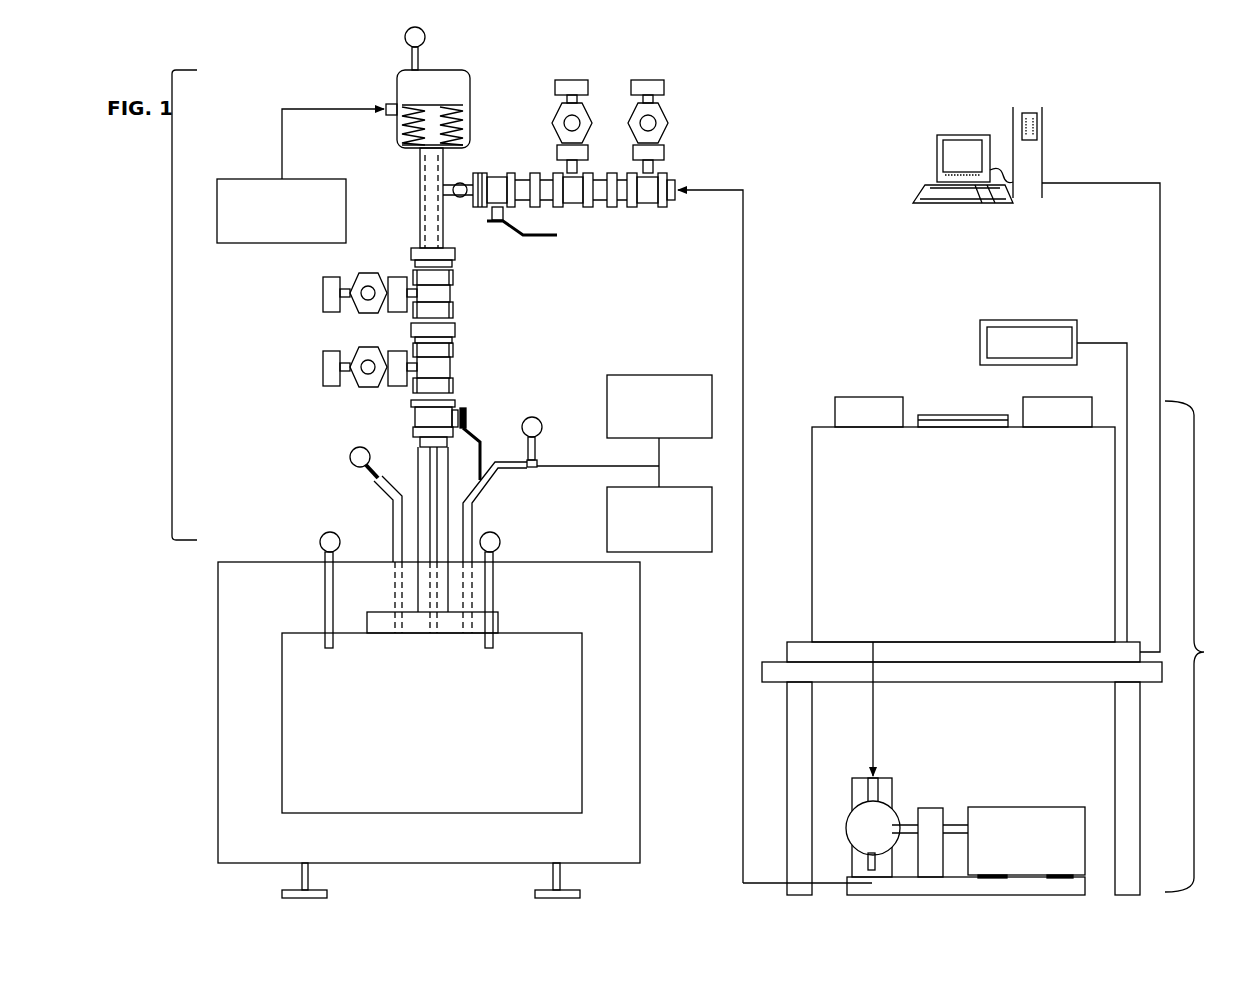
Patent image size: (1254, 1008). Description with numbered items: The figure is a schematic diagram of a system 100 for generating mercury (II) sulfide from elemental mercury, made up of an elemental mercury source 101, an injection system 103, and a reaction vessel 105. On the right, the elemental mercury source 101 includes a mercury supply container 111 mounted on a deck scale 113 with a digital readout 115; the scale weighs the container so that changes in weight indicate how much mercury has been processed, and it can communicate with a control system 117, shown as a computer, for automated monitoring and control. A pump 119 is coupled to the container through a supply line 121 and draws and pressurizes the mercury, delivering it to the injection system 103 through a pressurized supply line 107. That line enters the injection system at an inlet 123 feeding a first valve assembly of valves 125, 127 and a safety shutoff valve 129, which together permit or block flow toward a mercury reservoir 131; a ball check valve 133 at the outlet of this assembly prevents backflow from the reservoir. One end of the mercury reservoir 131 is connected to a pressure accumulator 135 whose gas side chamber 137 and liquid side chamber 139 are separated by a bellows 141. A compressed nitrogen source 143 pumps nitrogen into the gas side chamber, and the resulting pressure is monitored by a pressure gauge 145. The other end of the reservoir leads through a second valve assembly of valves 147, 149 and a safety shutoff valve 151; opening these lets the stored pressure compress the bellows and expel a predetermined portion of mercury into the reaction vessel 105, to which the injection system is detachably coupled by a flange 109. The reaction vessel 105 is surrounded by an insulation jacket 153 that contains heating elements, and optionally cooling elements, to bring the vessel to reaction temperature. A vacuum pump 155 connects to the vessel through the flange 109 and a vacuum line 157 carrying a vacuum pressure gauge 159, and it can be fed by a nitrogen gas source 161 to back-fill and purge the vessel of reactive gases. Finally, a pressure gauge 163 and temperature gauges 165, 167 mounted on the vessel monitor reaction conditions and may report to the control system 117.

The system 100 is at (1182, 122).
The elemental mercury source 101 is at (1206, 652).
The injection system 103 is at (170, 302).
The reaction vessel 105 is at (282, 722).
The supply line 107 is at (743, 280).
The flange 109 is at (498, 620).
The mercury supply container 111 is at (820, 427).
The deck scale 113 is at (800, 642).
The digital readout 115 is at (980, 343).
The control system 117 is at (937, 157).
The pump 119 is at (1025, 807).
The supply line 121 is at (875, 724).
The inlet 123 is at (668, 207).
The valve 125 is at (670, 125).
The valve 127 is at (573, 80).
The shutoff valve 129 is at (536, 242).
The mercury reservoir 131 is at (420, 186).
The ball check valve 133 is at (466, 182).
The pressure accumulator 135 is at (397, 90).
The gas side chamber 137 is at (433, 80).
The liquid side chamber 139 is at (435, 125).
The bellows 141 is at (397, 132).
The compressed nitrogen source 143 is at (253, 179).
The pressure gauge 145 is at (405, 38).
The valve 147 is at (323, 293).
The valve 149 is at (323, 367).
The shutoff valve 151 is at (478, 428).
The insulation jacket 153 is at (630, 762).
The vacuum pump 155 is at (607, 390).
The vacuum line 157 is at (563, 476).
The vacuum pressure gauge 159 is at (540, 446).
The nitrogen gas source 161 is at (607, 538).
The pressure gauge 163 is at (352, 450).
The temperature gauge 165 is at (322, 538).
The temperature gauge 167 is at (492, 533).